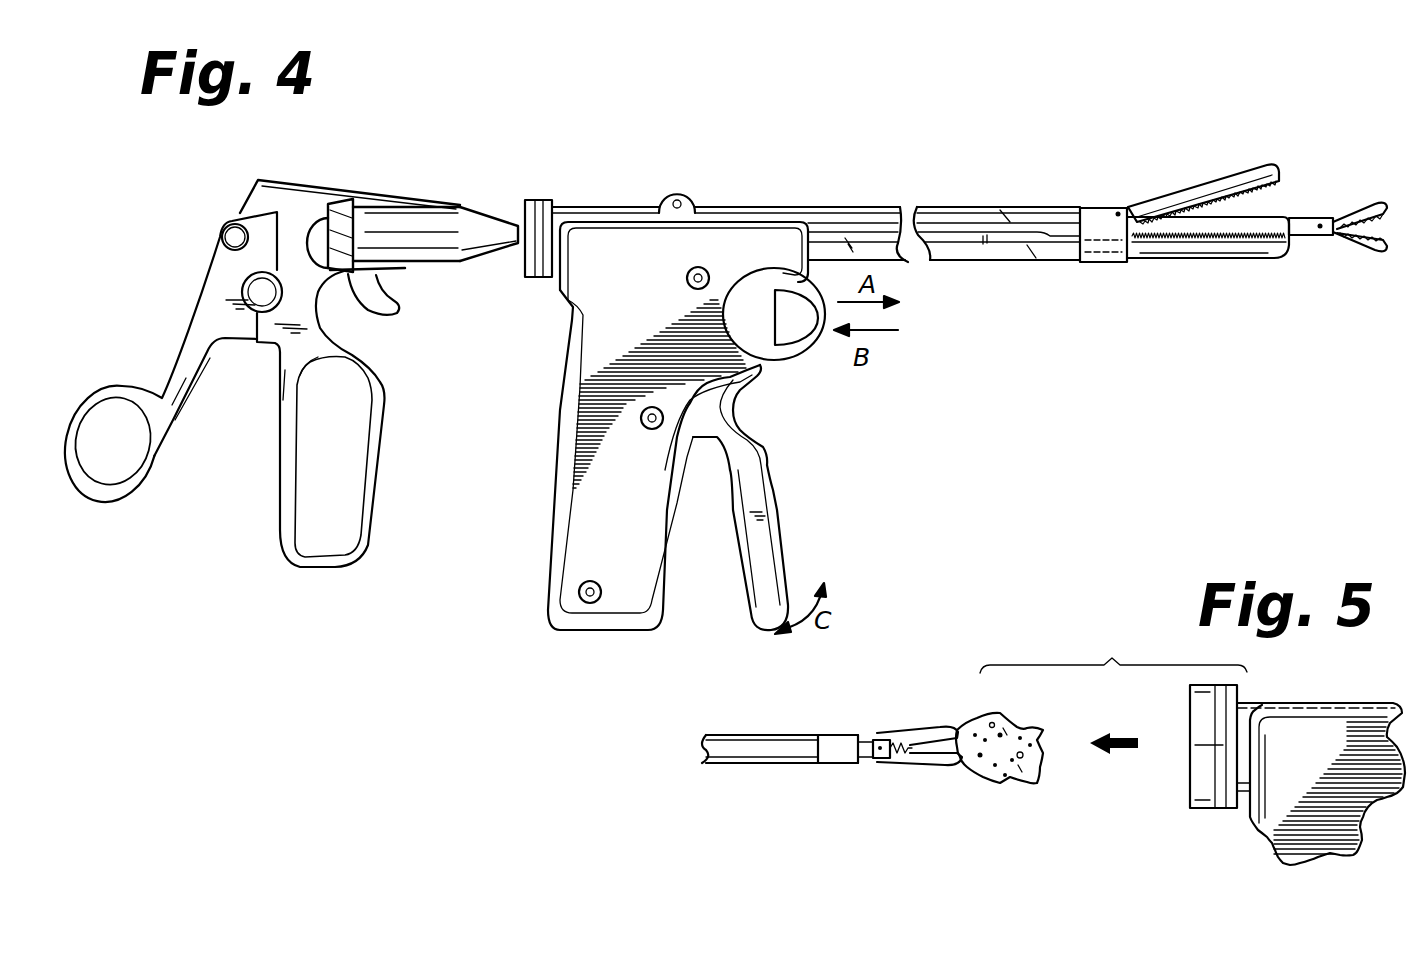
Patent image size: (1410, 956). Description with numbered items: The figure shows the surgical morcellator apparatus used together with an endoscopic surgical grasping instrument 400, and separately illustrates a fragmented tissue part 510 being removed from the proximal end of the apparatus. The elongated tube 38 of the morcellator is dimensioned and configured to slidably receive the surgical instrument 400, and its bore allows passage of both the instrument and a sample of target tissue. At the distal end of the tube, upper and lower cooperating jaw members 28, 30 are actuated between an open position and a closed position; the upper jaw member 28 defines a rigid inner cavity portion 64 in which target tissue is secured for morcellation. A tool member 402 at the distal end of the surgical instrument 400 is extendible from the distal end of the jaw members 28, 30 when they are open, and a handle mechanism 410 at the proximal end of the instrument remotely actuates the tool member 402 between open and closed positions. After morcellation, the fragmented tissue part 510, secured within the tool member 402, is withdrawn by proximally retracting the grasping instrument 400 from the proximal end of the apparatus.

In FIG. 4, the surgical instrument 400 is at (388, 186).
In FIG. 4, the handle mechanism 410 is at (223, 477).
In FIG. 4, the elongated tube 38 is at (875, 207).
In FIG. 4, the upper cooperating jaw member 28 is at (1229, 164).
In FIG. 4, the lower cooperating jaw member 30 is at (1183, 249).
In FIG. 4, the inner cavity portion 64 is at (1261, 198).
In FIG. 4, the tool member 402 is at (1348, 248).
In FIG. 5, the tool member 402 is at (912, 768).
In FIG. 5, the fragmented tissue part 510 is at (1012, 783).